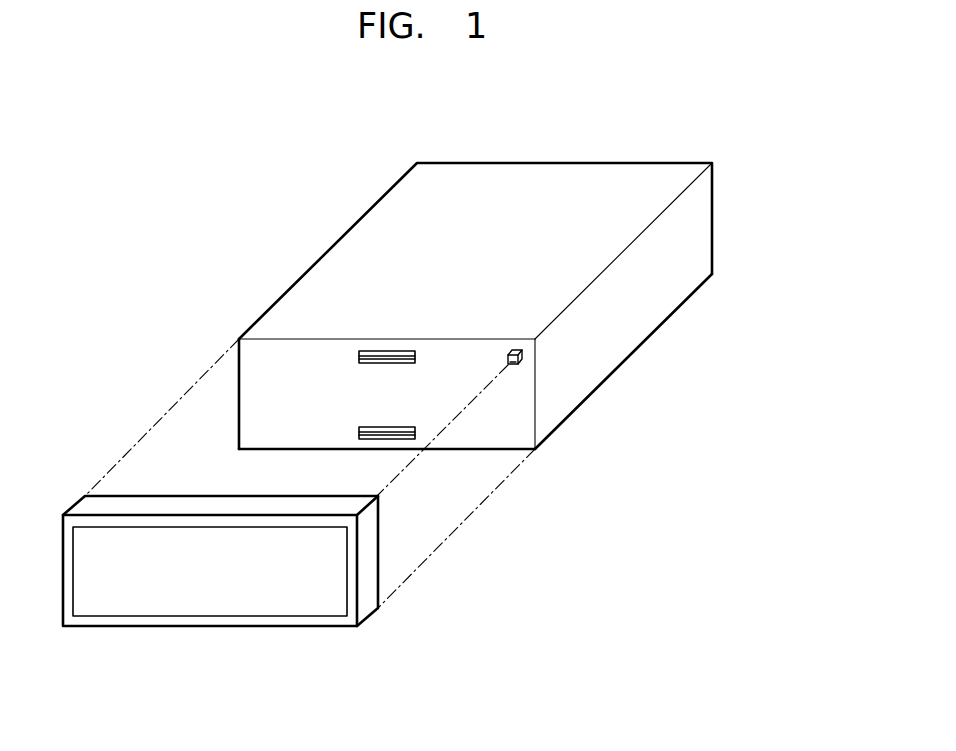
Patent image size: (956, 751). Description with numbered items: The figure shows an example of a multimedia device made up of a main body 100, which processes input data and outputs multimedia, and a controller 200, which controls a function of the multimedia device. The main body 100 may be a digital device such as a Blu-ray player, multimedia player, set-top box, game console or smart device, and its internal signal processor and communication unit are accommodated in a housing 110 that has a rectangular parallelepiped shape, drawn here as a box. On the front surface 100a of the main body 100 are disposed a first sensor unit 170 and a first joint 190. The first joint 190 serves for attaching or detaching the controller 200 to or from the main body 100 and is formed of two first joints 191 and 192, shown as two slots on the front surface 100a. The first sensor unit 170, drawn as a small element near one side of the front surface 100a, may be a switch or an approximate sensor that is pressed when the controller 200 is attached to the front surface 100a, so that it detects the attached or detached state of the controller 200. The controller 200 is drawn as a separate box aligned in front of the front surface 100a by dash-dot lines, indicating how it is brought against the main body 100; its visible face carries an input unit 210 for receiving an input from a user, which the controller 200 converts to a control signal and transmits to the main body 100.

The main body 100 is at (735, 172).
The housing 110 is at (653, 292).
The front surface 100a is at (488, 438).
The first sensor unit 170 is at (520, 365).
The first joint 190 is at (292, 311).
The first joint 191 is at (372, 352).
The first joint 192 is at (368, 429).
The controller 200 is at (365, 613).
The input unit 210 is at (203, 603).